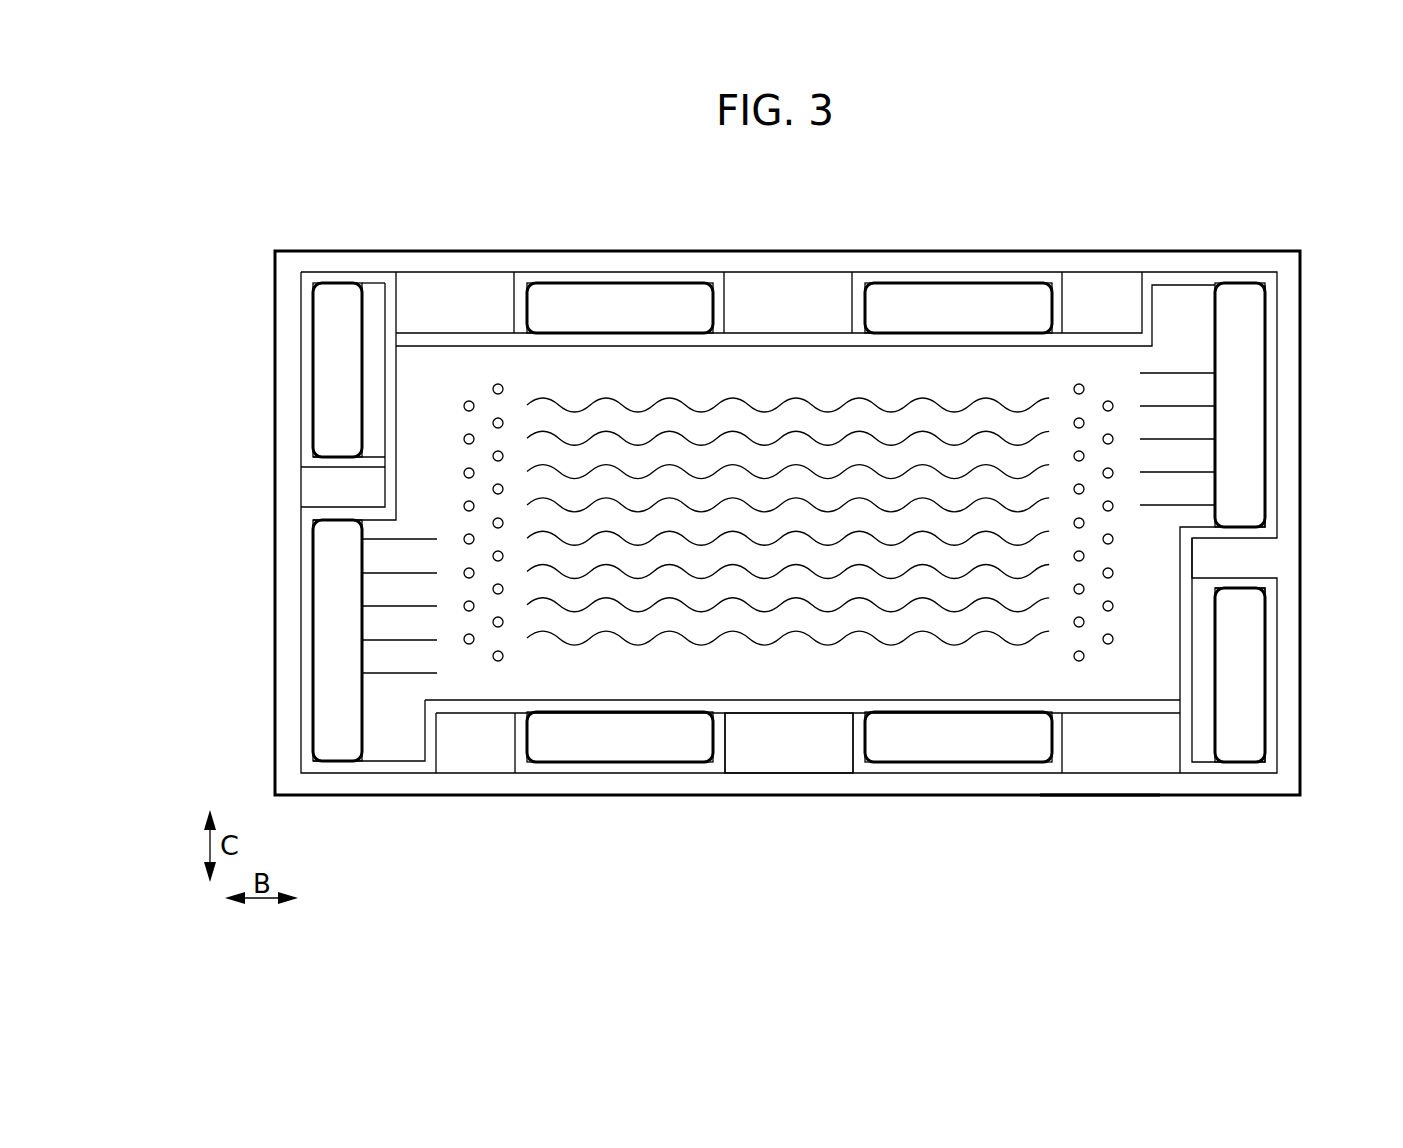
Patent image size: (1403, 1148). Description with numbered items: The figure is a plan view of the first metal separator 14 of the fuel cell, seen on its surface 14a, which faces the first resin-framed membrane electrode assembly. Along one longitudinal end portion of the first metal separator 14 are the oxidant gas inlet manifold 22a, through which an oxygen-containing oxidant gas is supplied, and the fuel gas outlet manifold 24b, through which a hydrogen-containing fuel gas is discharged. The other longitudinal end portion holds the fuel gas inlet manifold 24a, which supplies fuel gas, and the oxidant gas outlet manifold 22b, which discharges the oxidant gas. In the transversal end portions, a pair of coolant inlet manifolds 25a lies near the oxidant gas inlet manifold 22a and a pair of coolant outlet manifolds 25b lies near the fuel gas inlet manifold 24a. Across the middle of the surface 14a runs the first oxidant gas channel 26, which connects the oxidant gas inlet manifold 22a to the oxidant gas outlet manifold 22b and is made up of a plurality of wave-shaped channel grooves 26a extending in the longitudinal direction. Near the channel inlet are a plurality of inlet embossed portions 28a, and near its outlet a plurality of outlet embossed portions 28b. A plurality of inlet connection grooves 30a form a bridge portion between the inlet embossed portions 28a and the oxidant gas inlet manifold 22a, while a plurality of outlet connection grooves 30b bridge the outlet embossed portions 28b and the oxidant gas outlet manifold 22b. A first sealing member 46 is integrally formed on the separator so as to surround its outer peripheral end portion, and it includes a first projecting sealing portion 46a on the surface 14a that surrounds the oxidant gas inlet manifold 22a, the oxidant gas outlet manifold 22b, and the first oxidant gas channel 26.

The first metal separator 14 is at (868, 162).
The surface of the first metal separator 14a is at (1105, 770).
The oxidant gas inlet manifold 22a is at (1233, 388).
The oxidant gas outlet manifold 22b is at (330, 606).
The fuel gas inlet manifold 24a is at (330, 374).
The fuel gas outlet manifold 24b is at (1252, 672).
The coolant inlet manifolds 25a is at (960, 305).
The coolant outlet manifolds 25b is at (617, 300).
The first oxidant gas channel 26 is at (774, 390).
The wave-shaped channel grooves 26a is at (843, 435).
The inlet embossed portions 28a is at (1081, 418).
The outlet embossed portions 28b is at (496, 628).
The inlet connection grooves 30a is at (1197, 460).
The outlet connection grooves 30b is at (390, 553).
The first sealing member 46 is at (704, 798).
The first projecting sealing portion 46a is at (778, 713).